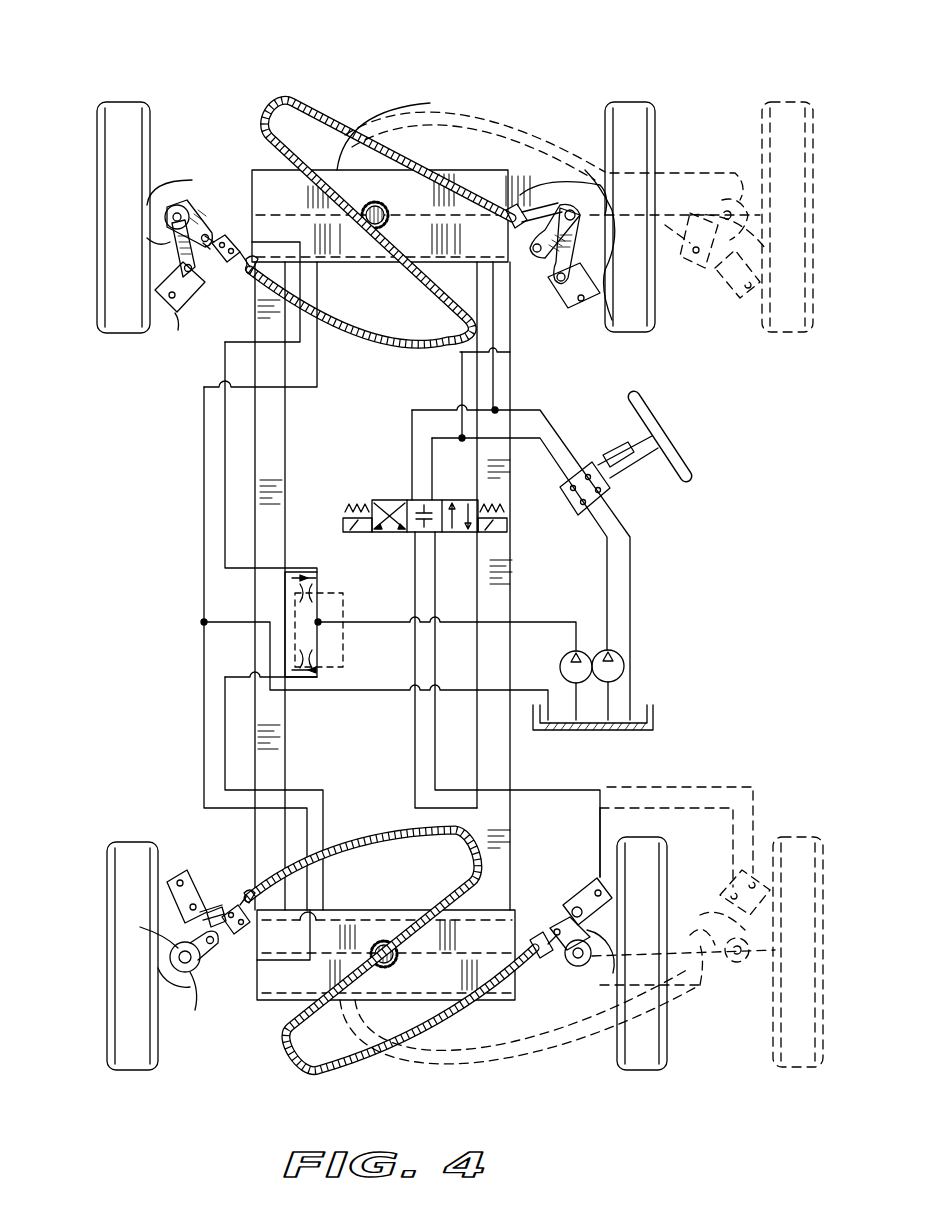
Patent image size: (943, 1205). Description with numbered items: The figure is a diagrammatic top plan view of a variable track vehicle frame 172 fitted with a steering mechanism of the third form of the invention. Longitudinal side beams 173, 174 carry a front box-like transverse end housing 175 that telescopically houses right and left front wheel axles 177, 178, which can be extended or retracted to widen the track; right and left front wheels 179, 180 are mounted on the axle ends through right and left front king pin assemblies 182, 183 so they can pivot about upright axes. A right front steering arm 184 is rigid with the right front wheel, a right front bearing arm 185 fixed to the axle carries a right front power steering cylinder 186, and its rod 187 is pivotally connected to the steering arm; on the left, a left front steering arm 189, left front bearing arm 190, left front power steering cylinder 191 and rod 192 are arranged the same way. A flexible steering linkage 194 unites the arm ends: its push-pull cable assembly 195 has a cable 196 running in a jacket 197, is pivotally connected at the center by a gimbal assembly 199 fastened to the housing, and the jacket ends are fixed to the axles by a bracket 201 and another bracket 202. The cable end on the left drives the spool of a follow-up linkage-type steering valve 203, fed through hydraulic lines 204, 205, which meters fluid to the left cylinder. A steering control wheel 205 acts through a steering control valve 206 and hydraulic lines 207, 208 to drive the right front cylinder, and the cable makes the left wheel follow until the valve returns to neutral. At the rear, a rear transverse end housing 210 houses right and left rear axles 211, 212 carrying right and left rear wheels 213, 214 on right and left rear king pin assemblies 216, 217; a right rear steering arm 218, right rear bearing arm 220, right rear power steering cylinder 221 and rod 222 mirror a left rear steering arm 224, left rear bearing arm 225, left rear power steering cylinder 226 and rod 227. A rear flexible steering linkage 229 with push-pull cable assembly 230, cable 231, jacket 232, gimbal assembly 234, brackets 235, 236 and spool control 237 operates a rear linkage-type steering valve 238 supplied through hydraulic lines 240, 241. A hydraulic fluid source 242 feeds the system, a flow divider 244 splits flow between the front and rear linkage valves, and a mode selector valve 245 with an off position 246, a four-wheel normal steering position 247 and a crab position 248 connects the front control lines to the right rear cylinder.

The variable track vehicle frame 172 is at (250, 512).
The longitudinal side beam 173 is at (514, 386).
The longitudinal side beam 174 is at (278, 428).
The front transverse end housing 175 is at (350, 176).
The right front wheel axle 177 is at (548, 200).
The left front wheel axle 178 is at (237, 242).
The right front wheel 179 is at (642, 100).
The left front wheel 180 is at (108, 100).
The right front king pin assembly 182 is at (578, 214).
The left front king pin assembly 183 is at (164, 215).
The right front steering arm 184 is at (696, 262).
The right front bearing arm 185 is at (612, 322).
The right front power steering cylinder 186 is at (572, 306).
The rod 187 is at (548, 278).
The left front steering arm 189 is at (195, 226).
The left front bearing arm 190 is at (172, 270).
The left front power steering cylinder 191 is at (185, 308).
The rod 192 is at (180, 248).
The flexible steering linkage 194 is at (470, 145).
The push-pull cable assembly 195 is at (400, 165).
The cable 196 is at (510, 228).
The jacket 197 is at (340, 125).
The gimbal assembly 199 is at (425, 195).
The bracket 201 is at (528, 208).
The bracket 202 is at (252, 268).
The linkage-type steering valve 203 is at (226, 240).
The hydraulic line 204 is at (202, 432).
The hydraulic line / steering control wheel 205 is at (224, 462).
The steering control valve 206 is at (612, 490).
The hydraulic line 207 is at (552, 460).
The hydraulic line 208 is at (556, 437).
The rear transverse end housing 210 is at (338, 908).
The right rear axle 211 is at (532, 1000).
The left rear axle 212 is at (240, 940).
The right rear wheel 213 is at (652, 1072).
The left rear wheel 214 is at (140, 1072).
The right rear king pin assembly 216 is at (752, 950).
The left rear king pin assembly 217 is at (170, 958).
The right rear steering arm 218 is at (695, 988).
The right rear bearing arm 220 is at (625, 860).
The right rear power steering cylinder 221 is at (590, 880).
The rod 222 is at (572, 905).
The left rear steering arm 224 is at (205, 975).
The left rear bearing arm 225 is at (170, 950).
The left rear power steering cylinder 226 is at (178, 872).
The rod 227 is at (215, 905).
The flexible steering linkage 229 is at (388, 790).
The push-pull cable assembly 230 is at (352, 840).
The cable 231 is at (553, 928).
The jacket 232 is at (468, 832).
The gimbal assembly 234 is at (395, 944).
The bracket 235 is at (530, 943).
The bracket 236 is at (230, 906).
The spool control 237 is at (248, 920).
The linkage-type steering valve 238 is at (220, 962).
The hydraulic line 240 is at (224, 698).
The hydraulic line 241 is at (224, 735).
The hydraulic fluid source 242 is at (640, 672).
The flow divider 244 is at (290, 597).
The mode selector valve 245 is at (385, 495).
The off position 246 is at (422, 534).
The four-wheel normal steering position 247 is at (395, 535).
The crab position 248 is at (464, 498).